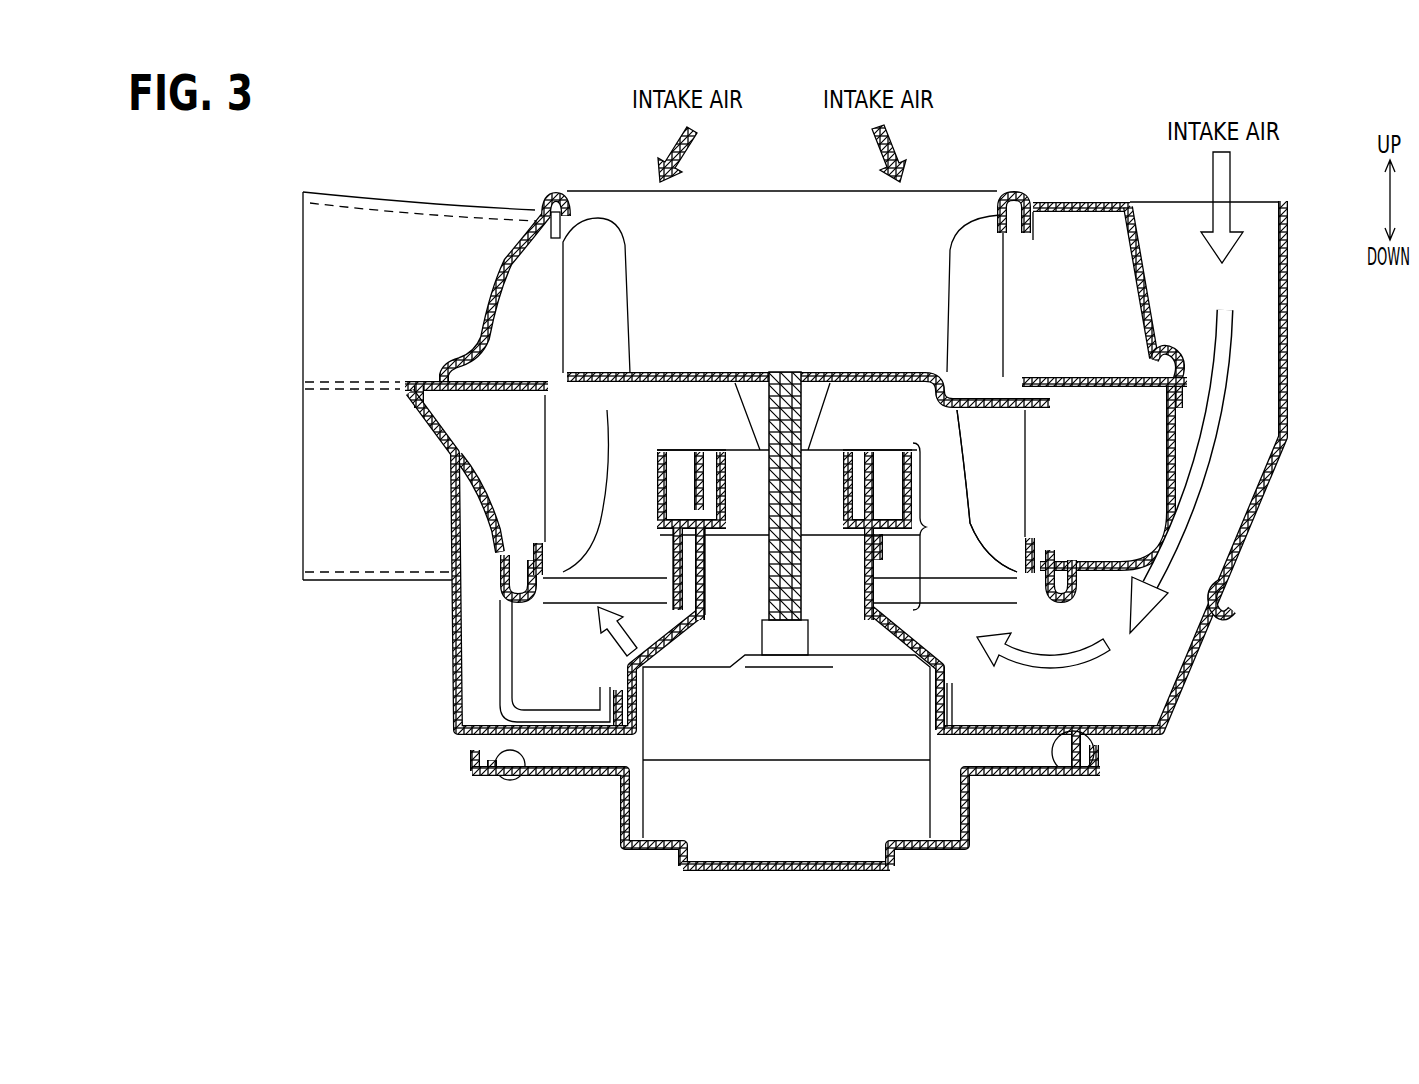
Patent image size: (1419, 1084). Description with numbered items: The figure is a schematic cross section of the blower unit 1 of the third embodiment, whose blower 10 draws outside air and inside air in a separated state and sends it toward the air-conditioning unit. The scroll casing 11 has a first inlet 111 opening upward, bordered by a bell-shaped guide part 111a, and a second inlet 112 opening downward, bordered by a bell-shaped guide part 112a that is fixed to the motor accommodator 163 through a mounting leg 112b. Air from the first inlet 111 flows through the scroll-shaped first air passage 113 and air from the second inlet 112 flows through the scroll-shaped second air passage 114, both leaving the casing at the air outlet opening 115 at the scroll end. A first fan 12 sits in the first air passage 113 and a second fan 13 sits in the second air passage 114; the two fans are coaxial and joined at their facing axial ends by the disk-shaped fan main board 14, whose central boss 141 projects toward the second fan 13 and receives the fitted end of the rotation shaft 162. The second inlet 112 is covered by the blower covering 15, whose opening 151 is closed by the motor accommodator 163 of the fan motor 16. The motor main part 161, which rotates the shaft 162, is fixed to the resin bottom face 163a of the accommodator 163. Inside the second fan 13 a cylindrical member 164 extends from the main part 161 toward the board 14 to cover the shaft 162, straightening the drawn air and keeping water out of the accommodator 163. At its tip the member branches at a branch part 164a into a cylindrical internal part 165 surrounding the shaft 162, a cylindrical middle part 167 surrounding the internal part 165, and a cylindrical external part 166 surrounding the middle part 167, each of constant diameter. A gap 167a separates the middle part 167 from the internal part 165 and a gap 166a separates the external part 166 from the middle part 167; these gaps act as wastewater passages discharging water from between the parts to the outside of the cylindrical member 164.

The blower unit 1 is at (327, 149).
The blower 10 is at (448, 194).
The scroll casing 11 is at (1019, 301).
The first fan 12 is at (1140, 290).
The second fan 13 is at (1039, 482).
The fan main board 14 is at (880, 375).
The blower covering 15 is at (1174, 747).
The fan motor 16 is at (597, 823).
The first inlet 111 is at (637, 250).
The guide part 111a is at (546, 196).
The second inlet 112 is at (953, 590).
The guide part 112a is at (535, 608).
The mounting leg 112b is at (510, 680).
The first air passage 113 is at (1100, 248).
The second air passage 114 is at (1140, 445).
The air outlet opening 115 is at (303, 297).
The boss 141 is at (787, 382).
The opening 151 is at (500, 778).
The main part 161 is at (667, 810).
The rotation shaft 162 is at (783, 595).
The motor accommodator 163 is at (978, 834).
The bottom face 163a is at (836, 870).
The cylindrical member 164 is at (784, 507).
The branch part 164a is at (862, 524).
The internal part 165 is at (705, 470).
The external part 166 is at (656, 480).
The gap 166a is at (667, 530).
The middle part 167 is at (693, 452).
The gap 167a is at (660, 505).